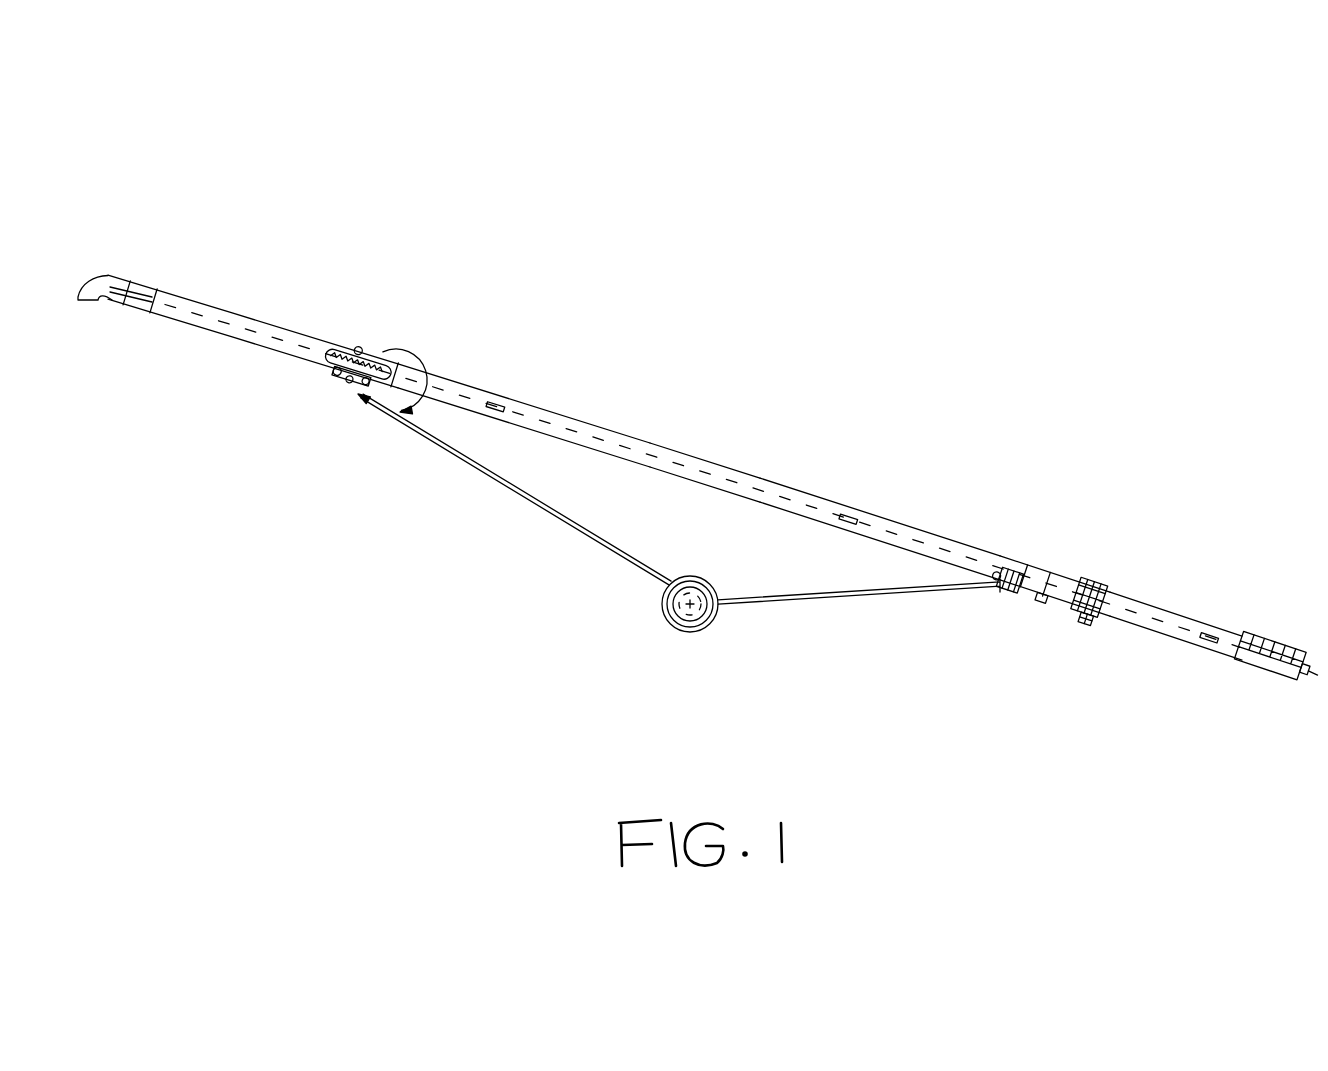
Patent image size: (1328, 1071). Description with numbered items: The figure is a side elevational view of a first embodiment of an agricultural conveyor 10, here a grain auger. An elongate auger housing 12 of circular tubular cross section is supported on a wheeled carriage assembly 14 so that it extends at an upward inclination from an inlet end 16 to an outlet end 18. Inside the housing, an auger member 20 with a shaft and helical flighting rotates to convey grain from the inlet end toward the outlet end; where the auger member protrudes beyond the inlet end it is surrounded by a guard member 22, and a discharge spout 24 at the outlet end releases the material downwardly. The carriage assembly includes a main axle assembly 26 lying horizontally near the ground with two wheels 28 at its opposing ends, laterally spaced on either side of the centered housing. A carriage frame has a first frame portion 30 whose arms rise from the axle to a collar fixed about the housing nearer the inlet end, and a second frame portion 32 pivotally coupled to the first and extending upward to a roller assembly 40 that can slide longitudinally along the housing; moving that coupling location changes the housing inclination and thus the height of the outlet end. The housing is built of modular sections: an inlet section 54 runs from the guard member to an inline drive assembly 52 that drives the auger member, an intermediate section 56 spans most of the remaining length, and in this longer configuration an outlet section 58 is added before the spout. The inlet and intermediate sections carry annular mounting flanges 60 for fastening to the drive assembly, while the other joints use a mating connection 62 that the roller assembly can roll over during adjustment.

The agricultural conveyor 10 is at (558, 180).
The auger housing 12 is at (709, 442).
The wheeled carriage assembly 14 is at (604, 593).
The inlet end 16 is at (1256, 602).
The outlet end 18 is at (173, 200).
The auger member 20 is at (812, 505).
The guard member 22 is at (1280, 647).
The discharge spout 24 is at (97, 300).
The main axle assembly 26 is at (690, 604).
The wheels 28 is at (713, 622).
The first frame portion 30 is at (858, 603).
The second frame portion 32 is at (530, 502).
The roller assembly 40 is at (365, 324).
The inline drive assembly 52 is at (1110, 537).
The inlet section 54 is at (1162, 625).
The intermediate section 56 is at (612, 430).
The outlet section 58 is at (237, 333).
The annular mounting flange 60 is at (1080, 586).
The mating connection 62 is at (150, 292).